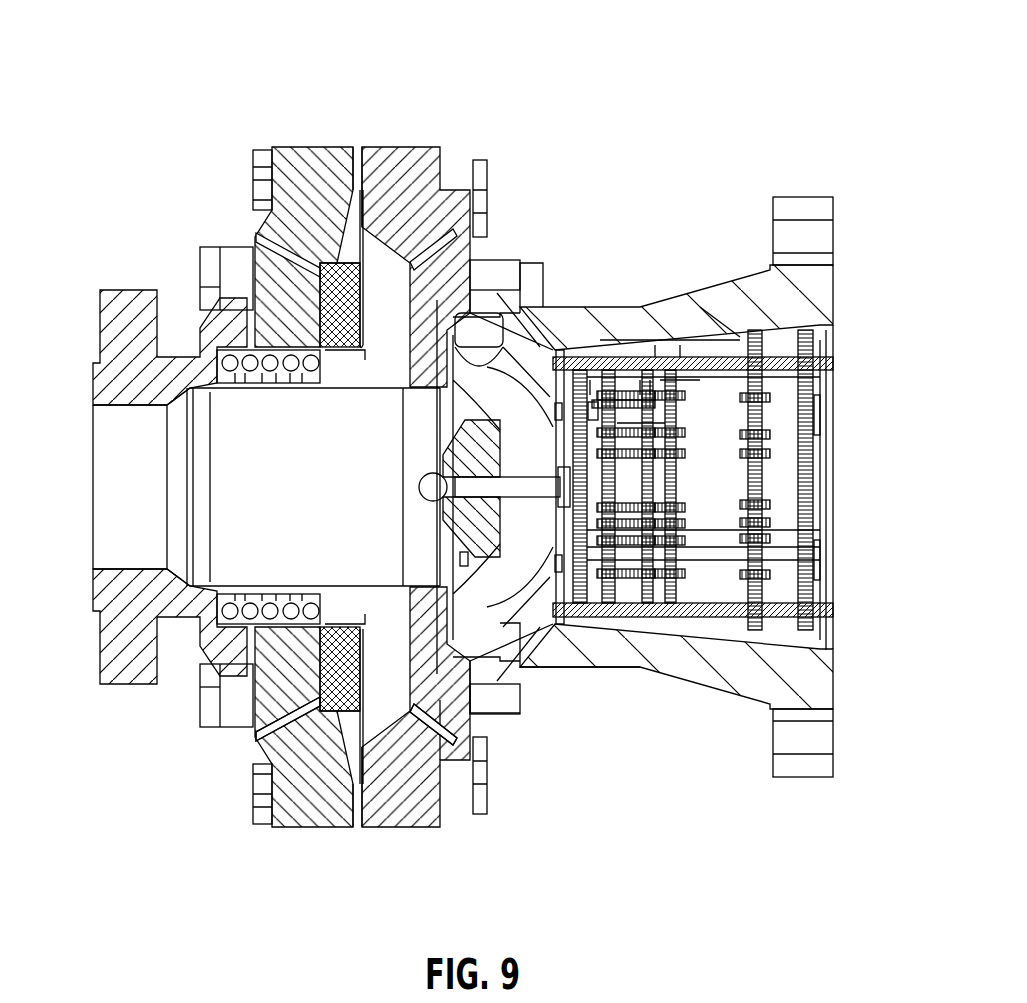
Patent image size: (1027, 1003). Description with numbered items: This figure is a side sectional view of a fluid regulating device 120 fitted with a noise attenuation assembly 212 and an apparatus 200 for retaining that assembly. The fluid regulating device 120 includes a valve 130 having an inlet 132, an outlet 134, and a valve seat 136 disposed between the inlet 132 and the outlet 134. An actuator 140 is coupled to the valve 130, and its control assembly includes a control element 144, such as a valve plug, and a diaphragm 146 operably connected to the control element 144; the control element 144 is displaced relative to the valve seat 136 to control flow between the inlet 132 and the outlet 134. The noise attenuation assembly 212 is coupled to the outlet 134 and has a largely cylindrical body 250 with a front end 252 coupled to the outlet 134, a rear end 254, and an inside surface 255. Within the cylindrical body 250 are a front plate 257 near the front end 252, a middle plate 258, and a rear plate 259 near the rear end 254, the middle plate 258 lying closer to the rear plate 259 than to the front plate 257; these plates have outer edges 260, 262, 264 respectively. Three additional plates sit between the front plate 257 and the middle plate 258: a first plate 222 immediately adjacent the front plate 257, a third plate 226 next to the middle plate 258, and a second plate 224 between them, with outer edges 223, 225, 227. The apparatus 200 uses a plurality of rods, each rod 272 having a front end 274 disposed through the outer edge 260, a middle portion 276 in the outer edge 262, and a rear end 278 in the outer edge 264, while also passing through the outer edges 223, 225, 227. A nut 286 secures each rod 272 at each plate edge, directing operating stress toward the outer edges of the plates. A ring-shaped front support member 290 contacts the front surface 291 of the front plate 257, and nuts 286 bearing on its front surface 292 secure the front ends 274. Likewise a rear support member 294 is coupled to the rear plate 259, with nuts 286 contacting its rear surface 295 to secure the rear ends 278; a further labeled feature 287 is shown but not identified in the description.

The fluid regulating device 120 is at (232, 60).
The valve 130 is at (86, 624).
The inlet 132 is at (97, 562).
The outlet 134 is at (467, 703).
The valve seat 136 is at (470, 723).
The actuator 140 is at (386, 214).
The control element 144 is at (361, 318).
The diaphragm 146 is at (345, 255).
The apparatus for retaining the noise attenuation assembly 200 is at (693, 580).
The noise attenuation assembly 212 is at (663, 294).
The first plate 222 is at (598, 385).
The outer edge of the first plate 223 is at (650, 380).
The second plate 224 is at (653, 380).
The outer edge of the second plate 225 is at (643, 380).
The third plate 226 is at (676, 380).
The outer edge of the third plate 227 is at (680, 350).
The cylindrical body 250 is at (588, 350).
The front end 252 is at (540, 640).
The rear end 254 is at (780, 303).
The inside surface 255 is at (727, 340).
The front plate 257 is at (607, 625).
The middle plate 258 is at (773, 487).
The rear plate 259 is at (790, 446).
The outer edge of the front plate 260 is at (578, 620).
The outer edge of the middle plate 262 is at (750, 625).
The outer edge of the rear plate 264 is at (825, 655).
The rod 272 is at (800, 348).
The front end of the rod 274 is at (620, 625).
The middle portion of the rod 276 is at (690, 607).
The rear end of the rod 278 is at (820, 625).
The nut 286 is at (562, 430).
The pin 287 is at (455, 487).
The front support member 290 is at (553, 565).
The front surface of the front plate 291 is at (432, 470).
The front surface of the front support member 292 is at (446, 420).
The rear support member 294 is at (822, 445).
The rear surface of the rear support member 295 is at (820, 488).